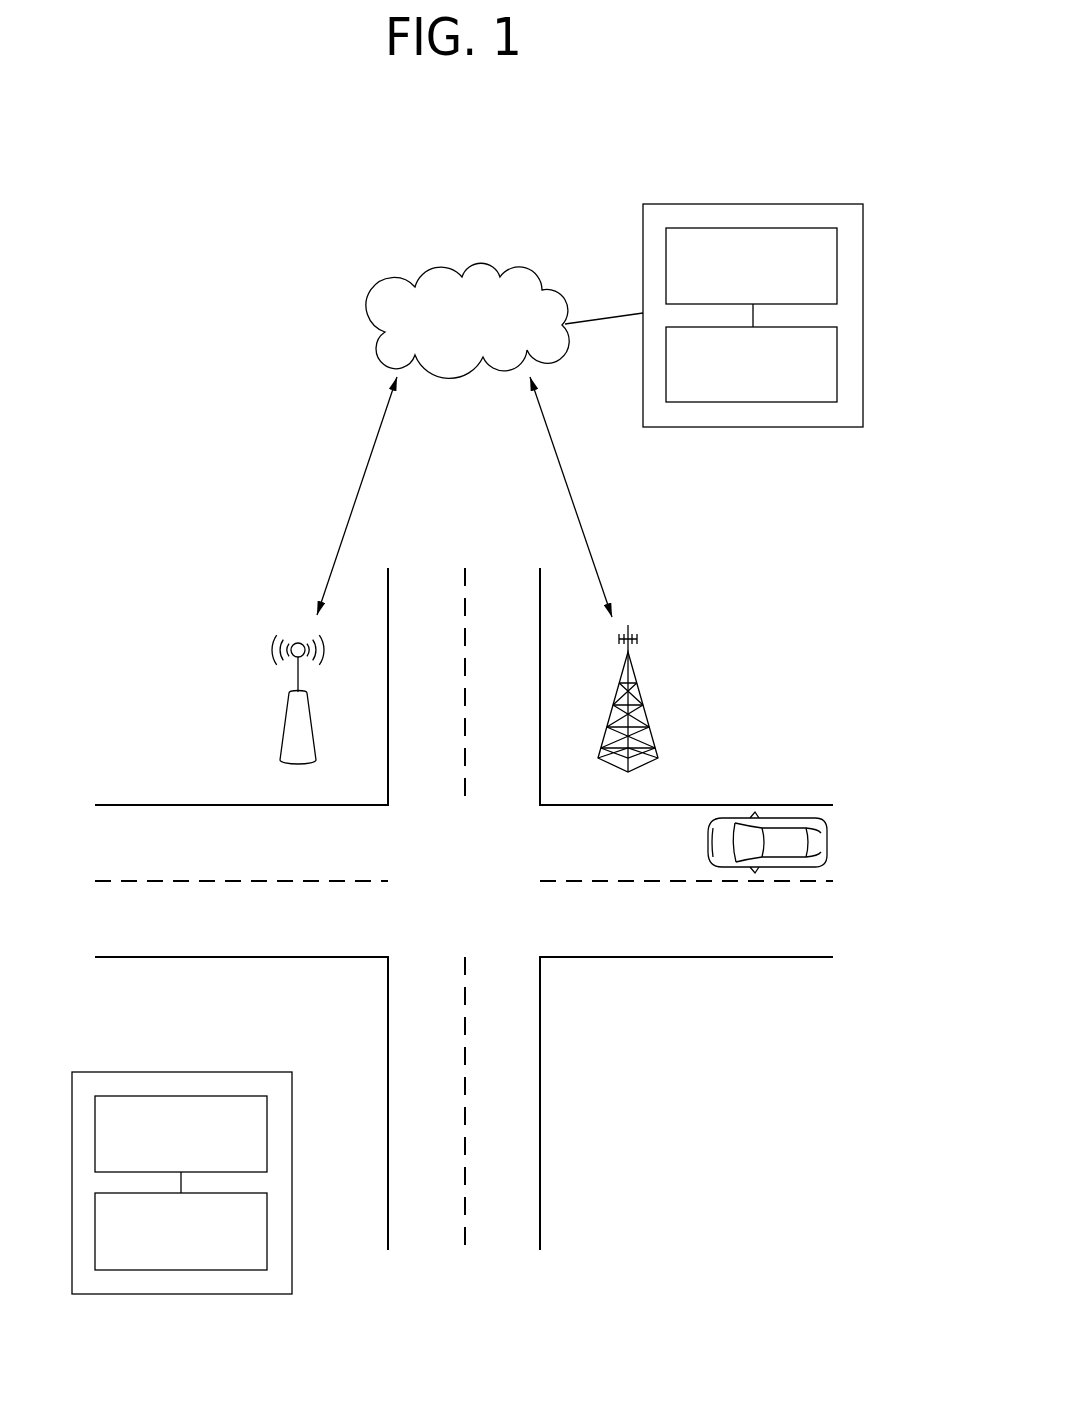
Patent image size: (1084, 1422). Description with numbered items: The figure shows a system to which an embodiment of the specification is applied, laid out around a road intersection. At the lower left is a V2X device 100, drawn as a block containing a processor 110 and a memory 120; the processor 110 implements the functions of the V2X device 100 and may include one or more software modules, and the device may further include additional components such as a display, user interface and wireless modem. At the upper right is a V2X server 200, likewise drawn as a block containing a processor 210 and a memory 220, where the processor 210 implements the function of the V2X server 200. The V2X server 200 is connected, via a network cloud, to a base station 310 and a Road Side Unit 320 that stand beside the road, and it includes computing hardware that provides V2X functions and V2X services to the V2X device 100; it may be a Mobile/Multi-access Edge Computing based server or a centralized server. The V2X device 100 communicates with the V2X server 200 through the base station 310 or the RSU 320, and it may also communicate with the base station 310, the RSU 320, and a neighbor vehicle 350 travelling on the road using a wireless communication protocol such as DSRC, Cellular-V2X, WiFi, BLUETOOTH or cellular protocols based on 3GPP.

The V2X device 100 is at (180, 1072).
The processor 110 is at (267, 1132).
The memory 120 is at (267, 1230).
The V2X server 200 is at (751, 204).
The processor 210 is at (837, 265).
The memory 220 is at (837, 364).
The base station 310 is at (642, 700).
The Road Side Unit (RSU) 320 is at (286, 712).
The neighbor vehicle 350 is at (765, 816).